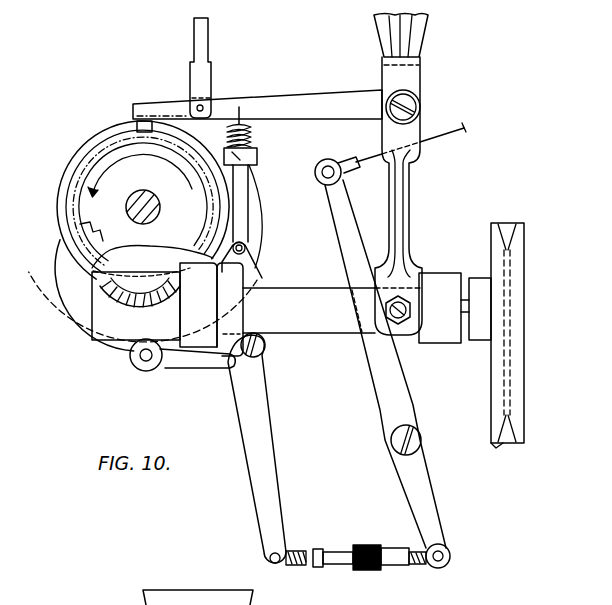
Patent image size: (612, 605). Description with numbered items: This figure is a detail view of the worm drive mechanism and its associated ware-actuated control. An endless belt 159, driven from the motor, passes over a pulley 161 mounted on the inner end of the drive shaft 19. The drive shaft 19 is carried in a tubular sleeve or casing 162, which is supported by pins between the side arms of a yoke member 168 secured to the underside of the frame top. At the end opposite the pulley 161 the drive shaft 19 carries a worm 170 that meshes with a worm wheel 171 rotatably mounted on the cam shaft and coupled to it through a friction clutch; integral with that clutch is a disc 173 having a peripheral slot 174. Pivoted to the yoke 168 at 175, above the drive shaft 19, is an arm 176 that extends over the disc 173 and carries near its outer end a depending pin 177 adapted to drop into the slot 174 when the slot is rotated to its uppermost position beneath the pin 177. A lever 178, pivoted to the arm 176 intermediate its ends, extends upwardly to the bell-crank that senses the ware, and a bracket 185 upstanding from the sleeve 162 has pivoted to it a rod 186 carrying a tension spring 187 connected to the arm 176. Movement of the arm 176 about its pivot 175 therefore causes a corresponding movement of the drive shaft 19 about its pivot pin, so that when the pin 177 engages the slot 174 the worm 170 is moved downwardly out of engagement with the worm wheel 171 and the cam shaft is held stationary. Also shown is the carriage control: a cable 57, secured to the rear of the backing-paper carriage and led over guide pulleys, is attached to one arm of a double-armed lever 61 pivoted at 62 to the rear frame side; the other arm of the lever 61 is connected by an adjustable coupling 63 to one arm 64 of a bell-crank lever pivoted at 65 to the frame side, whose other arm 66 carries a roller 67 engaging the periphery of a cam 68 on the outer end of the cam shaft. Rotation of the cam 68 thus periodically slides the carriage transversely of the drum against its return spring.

The lever 178 is at (195, 45).
The arm 176 is at (306, 100).
The depending projection or pin 177 is at (136, 125).
The disc 173 is at (102, 162).
The peripheral slot 174 is at (89, 227).
The tension spring 187 is at (255, 142).
The rod 186 is at (244, 193).
The bracket 185 is at (263, 279).
The worm wheel 171 is at (100, 272).
The worm 170 is at (110, 302).
The cam 68 is at (67, 297).
The roller 67 is at (131, 364).
The arm of bell-crank lever 66 is at (190, 357).
The pivot 65 is at (265, 343).
The arm of bell-crank lever 64 is at (265, 450).
The tubular sleeve or casing 162 is at (318, 296).
The yoke member 168 is at (442, 52).
The pivot 175 is at (418, 97).
The cable 57 is at (438, 142).
The double-armed lever 61 is at (373, 373).
The pivot 62 is at (421, 438).
The adjustable coupling 63 is at (397, 560).
The drive shaft 19 is at (463, 307).
The pulley 161 is at (491, 233).
The endless belt 159 is at (493, 413).